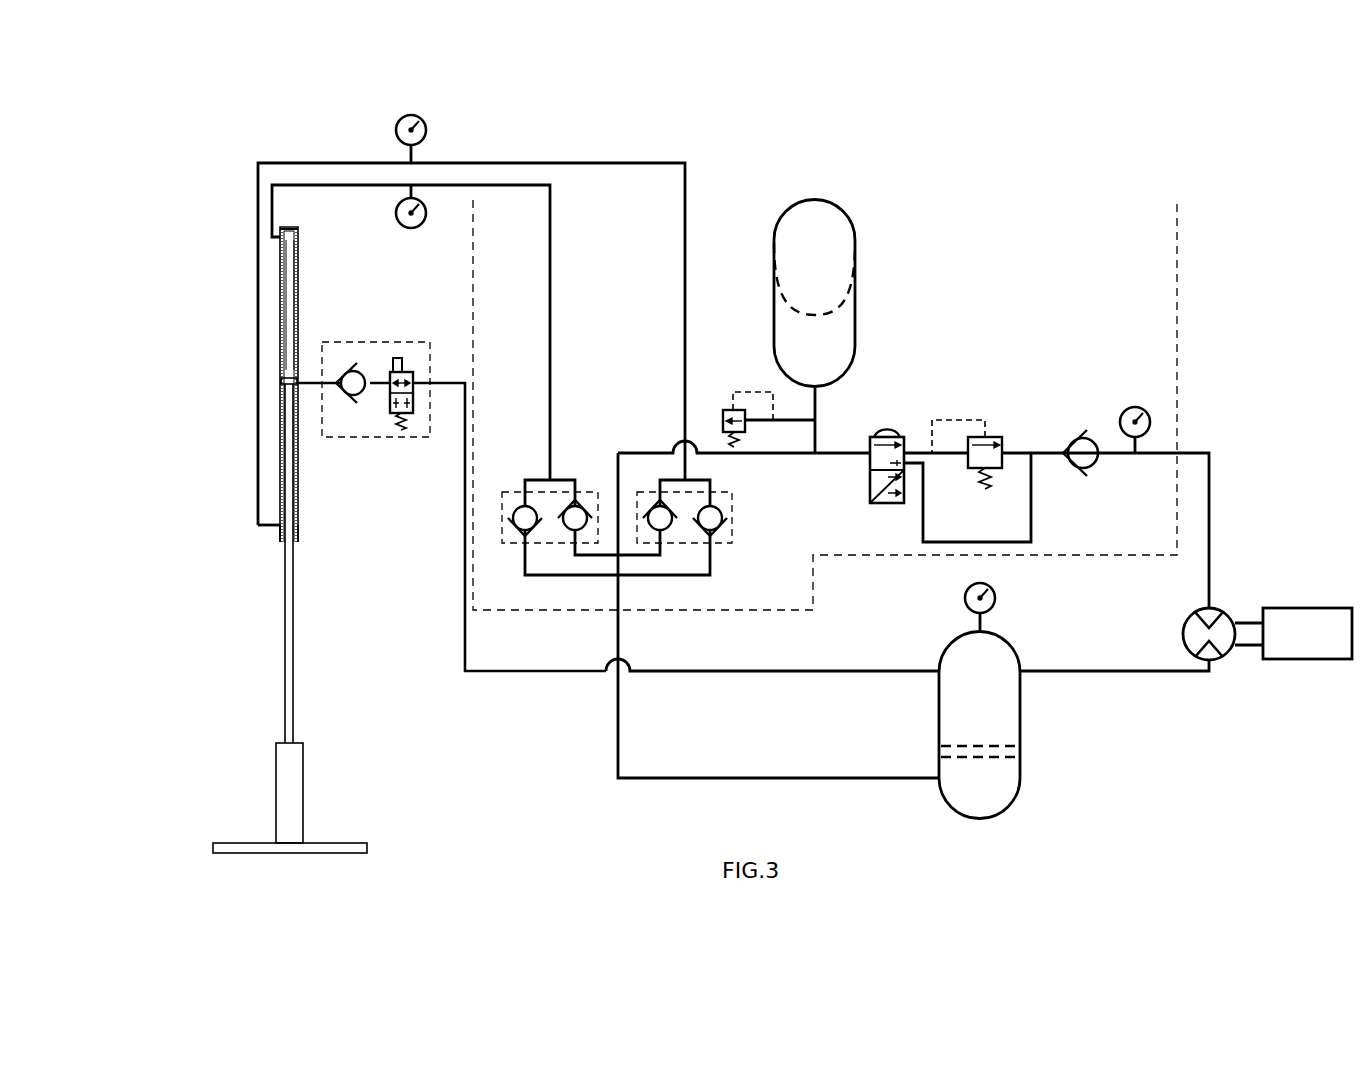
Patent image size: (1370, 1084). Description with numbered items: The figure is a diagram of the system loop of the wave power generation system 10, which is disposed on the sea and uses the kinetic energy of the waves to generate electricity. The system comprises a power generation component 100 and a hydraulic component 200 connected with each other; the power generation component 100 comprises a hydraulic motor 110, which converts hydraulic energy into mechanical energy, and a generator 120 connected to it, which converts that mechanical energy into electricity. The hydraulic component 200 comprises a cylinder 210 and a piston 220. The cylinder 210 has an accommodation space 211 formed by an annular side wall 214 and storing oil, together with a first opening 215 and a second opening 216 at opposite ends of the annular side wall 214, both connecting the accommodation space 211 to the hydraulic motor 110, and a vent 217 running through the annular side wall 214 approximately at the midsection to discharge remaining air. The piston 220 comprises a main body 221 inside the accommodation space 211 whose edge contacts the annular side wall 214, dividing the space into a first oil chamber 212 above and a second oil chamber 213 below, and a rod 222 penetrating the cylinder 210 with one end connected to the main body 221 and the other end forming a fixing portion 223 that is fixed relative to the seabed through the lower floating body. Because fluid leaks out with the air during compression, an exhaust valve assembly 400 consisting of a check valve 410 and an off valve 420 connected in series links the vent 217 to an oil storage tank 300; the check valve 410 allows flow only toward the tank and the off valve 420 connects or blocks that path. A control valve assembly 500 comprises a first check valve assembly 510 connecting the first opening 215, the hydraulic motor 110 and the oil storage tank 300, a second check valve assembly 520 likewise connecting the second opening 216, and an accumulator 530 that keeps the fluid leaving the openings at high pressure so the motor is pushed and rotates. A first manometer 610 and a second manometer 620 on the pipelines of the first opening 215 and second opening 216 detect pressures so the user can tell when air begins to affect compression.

The wave power generation system 10 is at (226, 175).
The power generation component 100 is at (1308, 595).
The hydraulic motor 110 is at (1222, 660).
The generator 120 is at (1308, 660).
The hydraulic component 200 is at (335, 290).
The cylinder 210 is at (305, 280).
The accommodation space 211 is at (256, 272).
The first oil chamber 212 is at (284, 402).
The second oil chamber 213 is at (287, 330).
The annular side wall 214 is at (299, 318).
The first opening 215 is at (280, 228).
The second opening 216 is at (280, 530).
The vent 217 is at (300, 378).
The piston 220 is at (296, 617).
The main body 221 is at (300, 392).
The rod 222 is at (285, 600).
The fixing portion 223 is at (352, 846).
The oil storage tank 300 is at (1022, 714).
The exhaust valve assembly 400 is at (428, 342).
The check valve 410 is at (348, 400).
The off valve 420 is at (416, 395).
The control valve assembly 500 is at (1178, 212).
The first check valve assembly 510 is at (515, 543).
The second check valve assembly 520 is at (720, 543).
The accumulator 530 is at (858, 296).
The first manometer 610 is at (396, 214).
The second manometer 620 is at (396, 130).